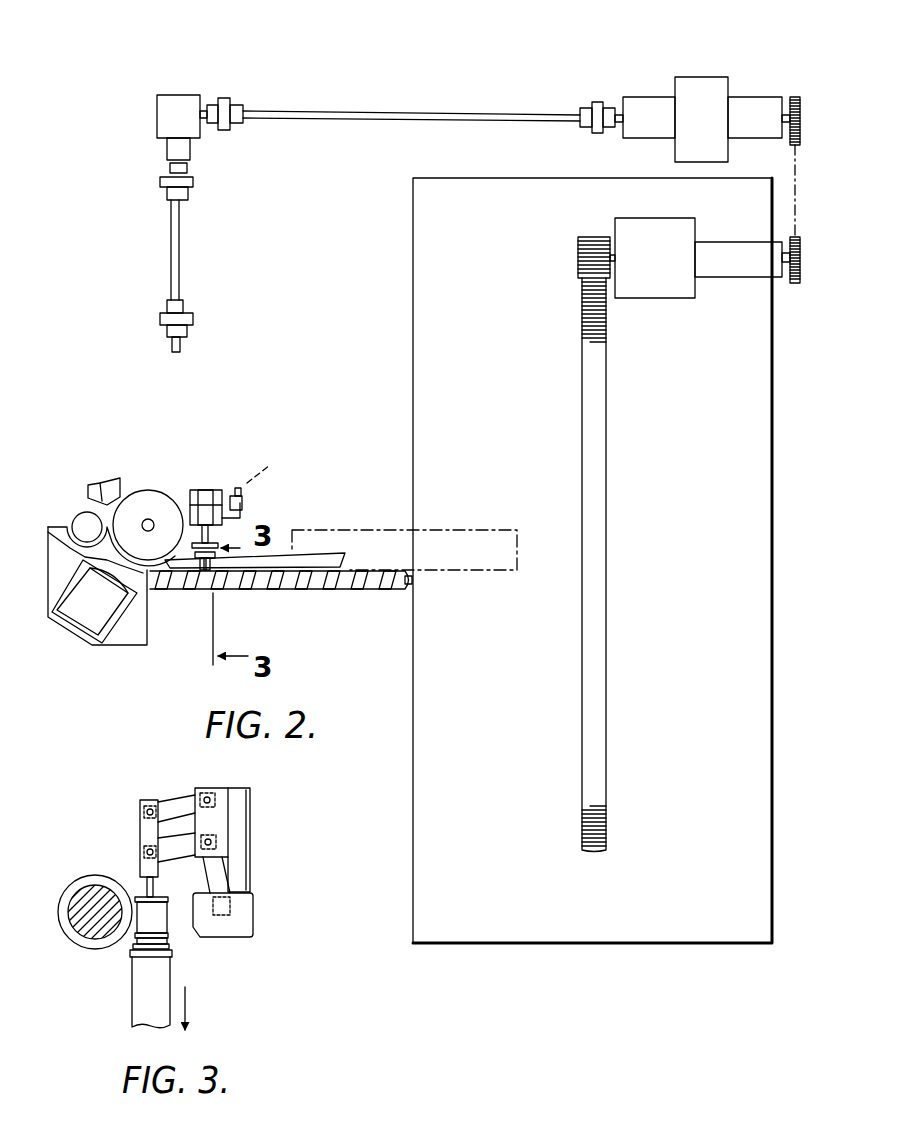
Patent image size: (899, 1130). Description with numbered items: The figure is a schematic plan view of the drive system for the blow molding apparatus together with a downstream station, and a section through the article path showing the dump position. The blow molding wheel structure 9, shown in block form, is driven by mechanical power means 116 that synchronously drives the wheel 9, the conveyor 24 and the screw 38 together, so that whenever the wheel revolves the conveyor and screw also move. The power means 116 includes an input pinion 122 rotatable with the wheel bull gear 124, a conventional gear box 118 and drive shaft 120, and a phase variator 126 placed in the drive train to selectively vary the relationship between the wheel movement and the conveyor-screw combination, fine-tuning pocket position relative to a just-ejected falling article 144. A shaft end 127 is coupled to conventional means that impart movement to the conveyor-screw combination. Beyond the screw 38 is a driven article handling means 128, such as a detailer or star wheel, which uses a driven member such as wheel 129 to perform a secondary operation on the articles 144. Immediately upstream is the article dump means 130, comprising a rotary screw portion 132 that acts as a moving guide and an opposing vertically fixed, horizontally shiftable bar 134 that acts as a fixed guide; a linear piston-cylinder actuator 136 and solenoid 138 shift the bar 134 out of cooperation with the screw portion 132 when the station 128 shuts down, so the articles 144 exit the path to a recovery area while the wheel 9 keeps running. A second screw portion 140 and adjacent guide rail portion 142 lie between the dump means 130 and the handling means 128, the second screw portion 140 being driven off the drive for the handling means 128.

In FIG. 2, the wheel structure 9 is at (435, 893).
In FIG. 2, the conveyor 24 is at (403, 543).
In FIG. 2, the screw 38 is at (340, 597).
In FIG. 2, the power means 116 is at (605, 90).
In FIG. 2, the gear box 118 is at (178, 103).
In FIG. 2, the drive shaft 120 is at (375, 110).
In FIG. 2, the input pinion 122 is at (598, 240).
In FIG. 2, the wheel bull gear 124 is at (582, 300).
In FIG. 2, the phase variator 126 is at (698, 88).
In FIG. 2, the shaft end 127 is at (170, 342).
In FIG. 2, the driven article handling means 128 is at (90, 475).
In FIG. 2, the wheel 129 is at (152, 490).
In FIG. 2, the article dump means 130 is at (250, 514).
In FIG. 2, the rotary screw portion 132 is at (223, 588).
In FIG. 3, the rotary screw portion 132 is at (108, 873).
In FIG. 2, the bar 134 is at (168, 560).
In FIG. 3, the bar 134 is at (230, 927).
In FIG. 2, the linear piston-cylinder actuator 136 is at (206, 505).
In FIG. 2, the solenoid 138 is at (243, 505).
In FIG. 2, the second screw portion 140 is at (170, 582).
In FIG. 2, the guide rail portion 142 is at (124, 508).
In FIG. 3, the article 144 is at (129, 979).